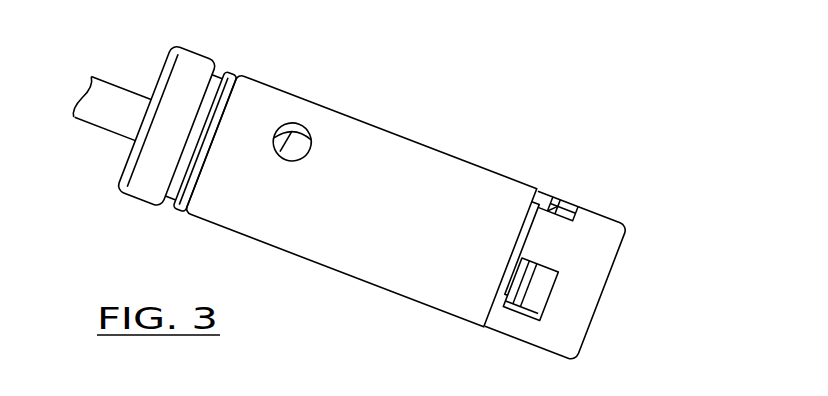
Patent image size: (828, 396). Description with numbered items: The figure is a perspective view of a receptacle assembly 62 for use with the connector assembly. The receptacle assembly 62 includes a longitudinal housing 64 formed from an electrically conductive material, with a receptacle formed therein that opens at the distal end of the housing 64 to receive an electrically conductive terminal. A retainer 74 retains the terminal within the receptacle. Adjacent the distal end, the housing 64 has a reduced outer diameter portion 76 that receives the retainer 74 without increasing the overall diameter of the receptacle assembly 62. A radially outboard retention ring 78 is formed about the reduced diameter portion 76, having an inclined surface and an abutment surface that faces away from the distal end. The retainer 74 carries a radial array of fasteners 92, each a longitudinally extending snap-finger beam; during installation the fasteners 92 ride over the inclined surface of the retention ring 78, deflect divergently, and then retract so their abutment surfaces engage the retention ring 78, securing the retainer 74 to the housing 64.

The receptacle assembly 62 is at (630, 73).
The longitudinal housing 64 is at (413, 137).
The retainer 74 is at (601, 209).
The reduced outer diameter portion 76 is at (542, 292).
The retention ring 78 is at (522, 281).
The fasteners 92 is at (545, 188).